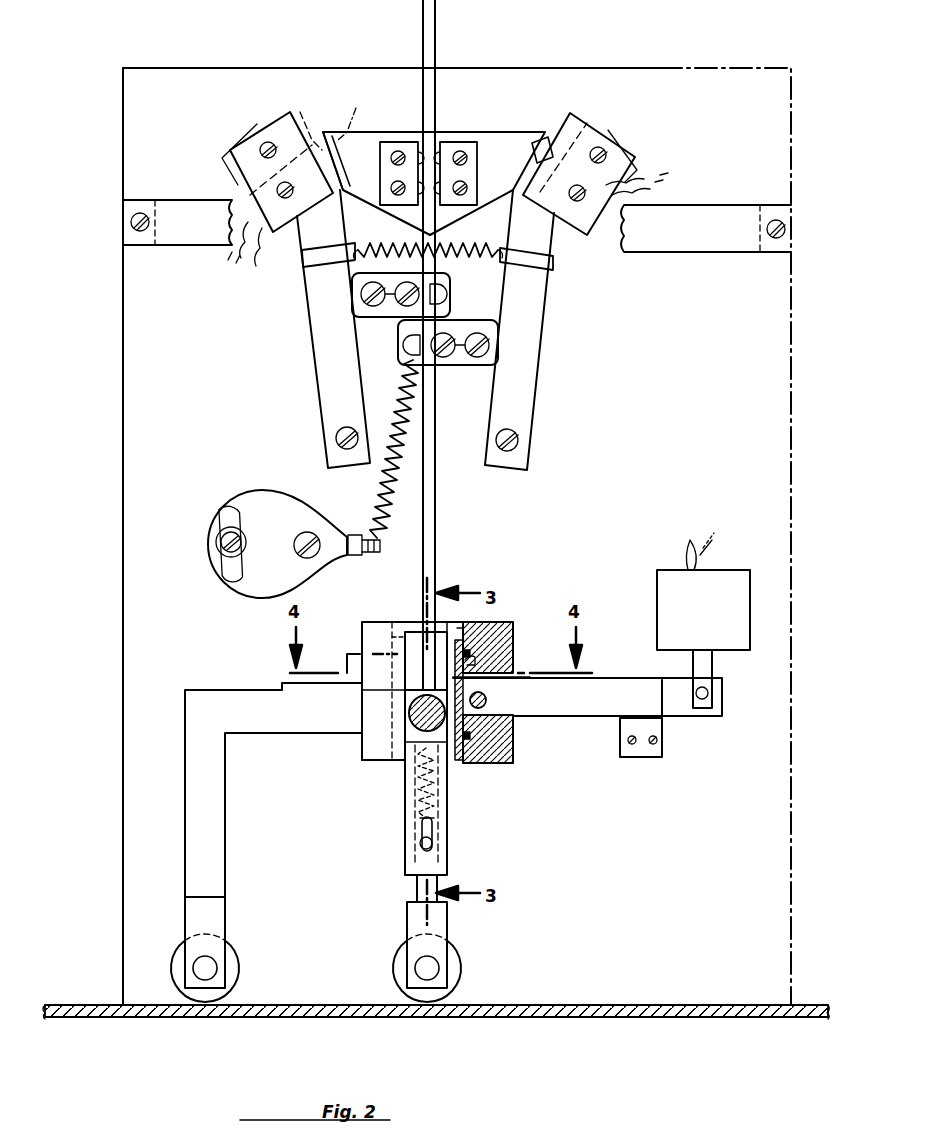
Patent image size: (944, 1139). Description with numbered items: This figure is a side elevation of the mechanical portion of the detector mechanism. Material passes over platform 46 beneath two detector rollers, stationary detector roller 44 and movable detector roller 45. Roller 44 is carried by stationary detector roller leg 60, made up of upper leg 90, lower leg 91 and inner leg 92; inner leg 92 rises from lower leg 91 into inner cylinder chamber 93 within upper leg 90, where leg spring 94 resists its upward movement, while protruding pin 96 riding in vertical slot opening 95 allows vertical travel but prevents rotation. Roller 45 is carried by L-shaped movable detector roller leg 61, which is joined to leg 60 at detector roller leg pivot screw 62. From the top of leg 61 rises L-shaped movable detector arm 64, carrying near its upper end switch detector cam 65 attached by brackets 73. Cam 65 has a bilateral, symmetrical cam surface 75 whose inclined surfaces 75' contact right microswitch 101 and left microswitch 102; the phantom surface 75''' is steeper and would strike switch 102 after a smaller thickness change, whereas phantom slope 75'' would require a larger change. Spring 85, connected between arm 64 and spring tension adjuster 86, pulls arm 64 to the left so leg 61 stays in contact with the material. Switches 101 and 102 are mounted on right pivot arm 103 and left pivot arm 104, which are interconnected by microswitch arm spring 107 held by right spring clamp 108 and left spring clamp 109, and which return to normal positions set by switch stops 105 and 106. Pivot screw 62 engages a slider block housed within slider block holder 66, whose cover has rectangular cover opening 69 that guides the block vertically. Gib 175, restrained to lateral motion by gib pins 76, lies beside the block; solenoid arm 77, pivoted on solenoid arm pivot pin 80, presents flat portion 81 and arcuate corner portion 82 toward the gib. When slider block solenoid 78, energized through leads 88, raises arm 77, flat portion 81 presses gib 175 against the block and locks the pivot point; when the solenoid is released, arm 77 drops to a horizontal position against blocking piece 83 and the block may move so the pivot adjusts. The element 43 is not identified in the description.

The support shelf 43 is at (694, 250).
The stationary detector roller 44 is at (458, 975).
The movable detector roller 45 is at (232, 975).
The platform 46 is at (640, 1005).
The stationary detector roller leg 60 is at (530, 832).
The movable detector roller leg 61 is at (213, 806).
The detector roller leg pivot screw 62 is at (418, 728).
The movable detector arm 64 is at (437, 485).
The switch detector cam 65 is at (510, 142).
The slider block holder 66 is at (363, 622).
The rectangular cover opening 69 is at (412, 660).
The brackets 73 is at (378, 165).
The cam surface 75 is at (345, 179).
The inclined cam surfaces 75' is at (444, 123).
The phantom cam slope 75'' is at (306, 117).
The phantom cam surface 75''' is at (359, 112).
The gib pins 76 is at (505, 640).
The solenoid arm 77 is at (620, 690).
The slider block solenoid 78 is at (735, 620).
The solenoid arm pivot pin 80 is at (486, 700).
The flat portion 81 is at (470, 687).
The arcuate corner portion 82 is at (513, 716).
The blocking piece 83 is at (658, 730).
The spring 85 is at (390, 500).
The spring tension adjuster 86 is at (265, 578).
The leads 88 is at (693, 543).
The upper leg 90 is at (415, 812).
The lower leg 91 is at (447, 925).
The inner leg 92 is at (417, 886).
The inner cylinder chamber 93 is at (438, 845).
The leg spring 94 is at (418, 790).
The vertical slot opening 95 is at (423, 835).
The protruding pin 96 is at (433, 843).
The right microswitch 101 is at (580, 132).
The left microswitch 102 is at (282, 118).
The right pivot arm 103 is at (528, 375).
The left pivot arm 104 is at (327, 383).
The switch stop 105 is at (460, 365).
The switch stop 106 is at (360, 308).
The microswitch arm spring 107 is at (455, 238).
The right spring clamp 108 is at (553, 262).
The left spring clamp 109 is at (318, 258).
The gib 175 is at (465, 650).